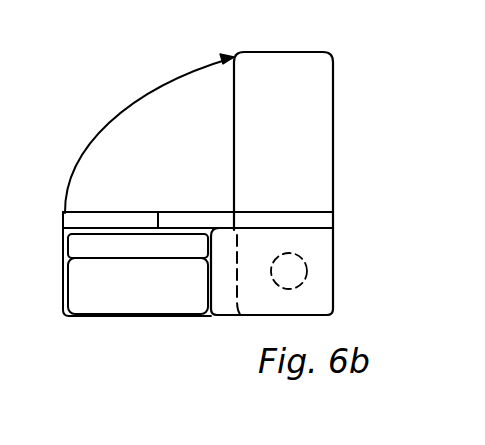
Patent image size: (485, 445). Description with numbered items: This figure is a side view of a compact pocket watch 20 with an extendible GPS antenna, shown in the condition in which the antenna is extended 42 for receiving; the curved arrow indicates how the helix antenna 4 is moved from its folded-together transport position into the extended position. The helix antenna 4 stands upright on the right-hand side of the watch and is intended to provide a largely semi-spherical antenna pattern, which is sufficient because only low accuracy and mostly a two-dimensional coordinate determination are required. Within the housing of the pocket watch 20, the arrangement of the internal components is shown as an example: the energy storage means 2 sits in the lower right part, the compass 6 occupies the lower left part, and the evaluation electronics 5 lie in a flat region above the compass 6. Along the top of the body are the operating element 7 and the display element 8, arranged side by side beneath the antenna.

The energy storage means 2 is at (272, 275).
The helix antenna 4 is at (283, 141).
The evaluation electronics 5 is at (97, 245).
The compass 6 is at (138, 286).
The operating element 7 is at (110, 212).
The display element 8 is at (201, 220).
The pocket watch 20 is at (336, 250).
The extended condition of the antenna 42 is at (148, 97).